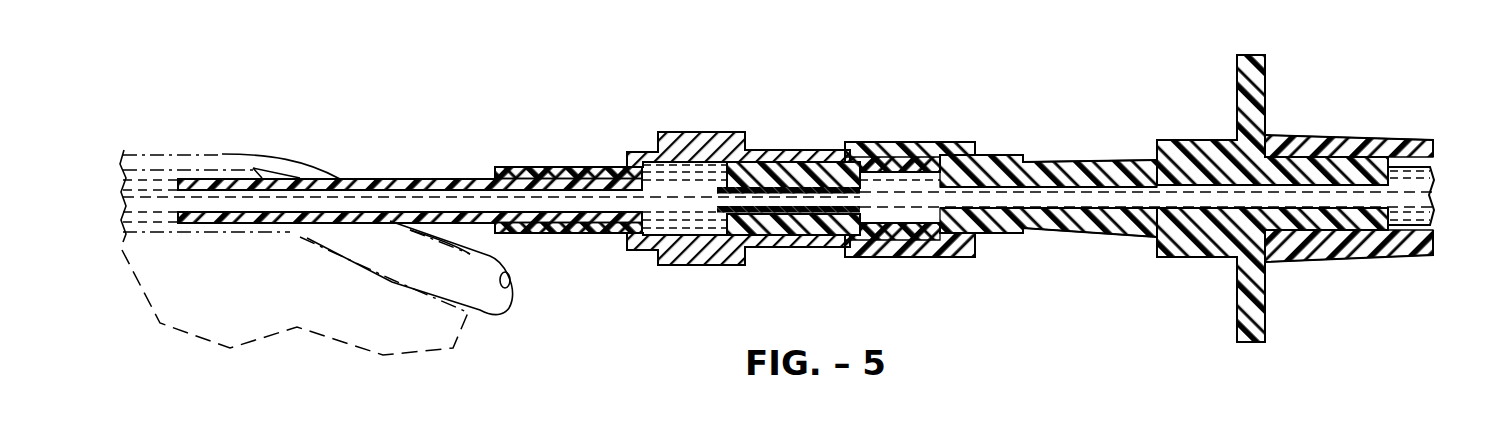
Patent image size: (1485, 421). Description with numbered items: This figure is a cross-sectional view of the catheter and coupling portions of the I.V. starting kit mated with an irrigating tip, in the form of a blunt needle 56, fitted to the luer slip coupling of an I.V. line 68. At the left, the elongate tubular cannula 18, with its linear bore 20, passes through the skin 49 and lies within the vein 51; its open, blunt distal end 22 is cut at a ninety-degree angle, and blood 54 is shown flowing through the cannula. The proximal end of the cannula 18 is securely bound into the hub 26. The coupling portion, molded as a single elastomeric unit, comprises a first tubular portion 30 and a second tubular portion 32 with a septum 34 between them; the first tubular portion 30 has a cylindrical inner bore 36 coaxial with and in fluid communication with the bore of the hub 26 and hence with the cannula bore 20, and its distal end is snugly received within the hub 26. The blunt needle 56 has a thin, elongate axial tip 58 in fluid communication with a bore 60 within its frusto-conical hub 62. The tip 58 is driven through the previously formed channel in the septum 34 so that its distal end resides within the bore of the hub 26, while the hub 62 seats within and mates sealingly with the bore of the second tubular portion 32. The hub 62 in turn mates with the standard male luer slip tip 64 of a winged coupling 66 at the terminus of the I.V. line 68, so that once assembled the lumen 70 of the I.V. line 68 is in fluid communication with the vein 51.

The cannula 18 is at (363, 178).
The linear bore 20 is at (428, 200).
The distal end 22 is at (176, 216).
The hub 26 is at (681, 266).
The first tubular portion 30 is at (760, 160).
The second tubular portion 32 is at (883, 143).
The septum 34 is at (813, 233).
The inner bore 36 is at (765, 160).
The skin 49 is at (247, 152).
The vein 51 is at (387, 282).
The blood 54 is at (156, 197).
The blunt needle 56 is at (1000, 143).
The axial tip 58 is at (720, 209).
The bore 60 is at (890, 213).
The hub 62 is at (947, 250).
The male luer slip tip 64 is at (1028, 223).
The winged coupling 66 is at (1195, 138).
The I.V. line 68 is at (1365, 138).
The lumen 70 is at (1417, 203).